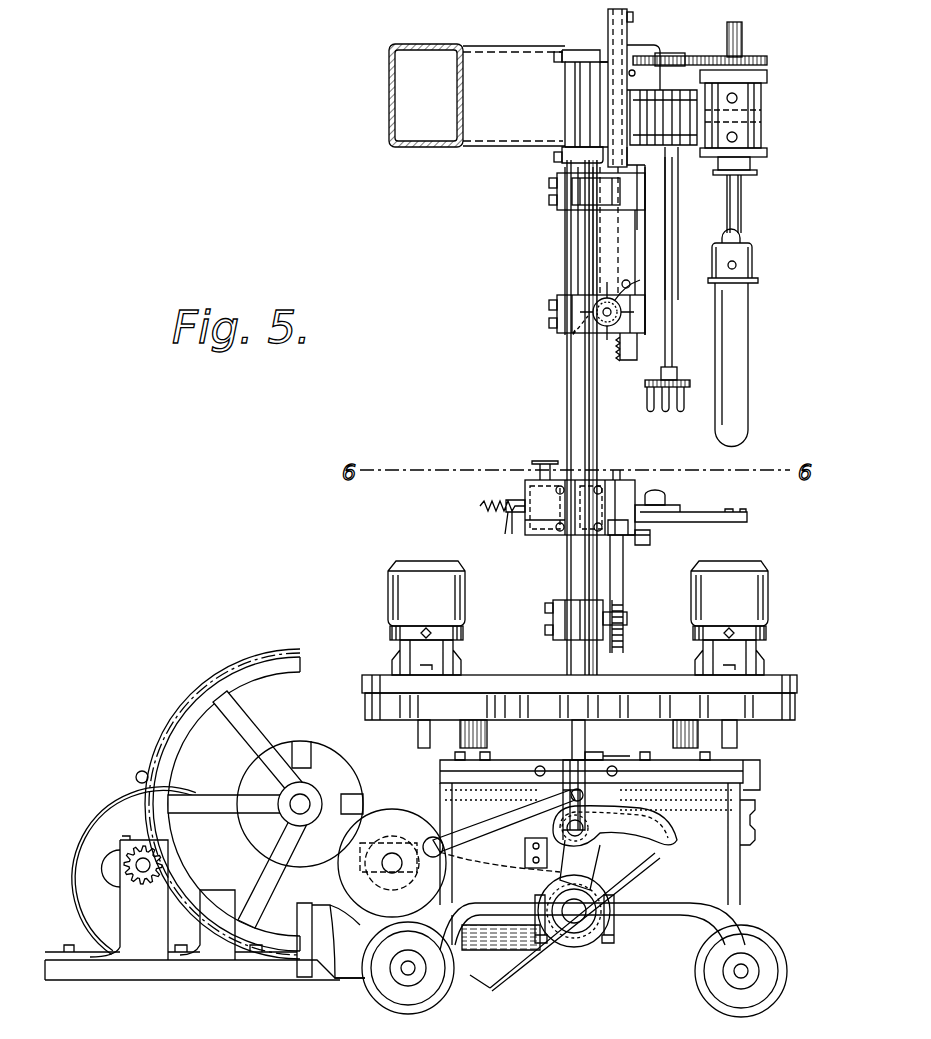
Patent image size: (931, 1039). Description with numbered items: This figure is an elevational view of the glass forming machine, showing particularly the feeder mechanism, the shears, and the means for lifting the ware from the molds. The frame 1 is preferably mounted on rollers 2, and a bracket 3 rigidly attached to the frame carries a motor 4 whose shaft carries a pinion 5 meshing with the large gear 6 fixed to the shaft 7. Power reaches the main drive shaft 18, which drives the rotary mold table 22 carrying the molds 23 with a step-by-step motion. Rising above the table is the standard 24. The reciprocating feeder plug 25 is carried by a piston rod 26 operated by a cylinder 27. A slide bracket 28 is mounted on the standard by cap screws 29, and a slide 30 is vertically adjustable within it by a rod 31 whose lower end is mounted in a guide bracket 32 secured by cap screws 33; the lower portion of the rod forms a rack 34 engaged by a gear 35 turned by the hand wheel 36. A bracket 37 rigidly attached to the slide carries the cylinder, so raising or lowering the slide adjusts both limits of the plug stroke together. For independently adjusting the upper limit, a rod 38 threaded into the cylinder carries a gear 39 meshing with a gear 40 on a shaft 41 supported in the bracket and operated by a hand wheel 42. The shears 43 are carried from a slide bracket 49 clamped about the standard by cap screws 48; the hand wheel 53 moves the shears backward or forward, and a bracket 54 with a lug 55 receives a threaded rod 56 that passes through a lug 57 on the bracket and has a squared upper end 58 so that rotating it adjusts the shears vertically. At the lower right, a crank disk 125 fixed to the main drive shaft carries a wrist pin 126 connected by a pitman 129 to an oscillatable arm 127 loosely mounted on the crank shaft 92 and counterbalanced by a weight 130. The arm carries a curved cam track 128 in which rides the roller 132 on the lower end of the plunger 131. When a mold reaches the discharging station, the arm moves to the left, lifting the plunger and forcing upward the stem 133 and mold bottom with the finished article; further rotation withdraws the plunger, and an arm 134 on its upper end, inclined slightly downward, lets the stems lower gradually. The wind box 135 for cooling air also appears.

The frame 1 is at (720, 889).
The rollers 2 is at (392, 992).
The bracket 3 is at (178, 972).
The motor 4 is at (107, 792).
The pinion 5 is at (136, 855).
The large gear 6 is at (236, 670).
The shaft 7 is at (288, 798).
The main drive shaft 18 is at (392, 853).
The rotary mold table 22 is at (470, 680).
The molds 23 is at (390, 590).
The standard 24 is at (567, 408).
The feeder plug 25 is at (752, 397).
The piston rod 26 is at (745, 208).
The cylinder 27 is at (765, 128).
The slide bracket 28 is at (608, 27).
The cap screws 29 is at (563, 60).
The slide 30 is at (630, 97).
The rod 31 is at (634, 162).
The guide bracket 32 is at (600, 222).
The cap screws 33 is at (557, 198).
The rack 34 is at (628, 345).
The gear 35 is at (565, 350).
The hand wheel 36 is at (583, 328).
The bracket 37 is at (690, 148).
The rod 38 is at (742, 36).
The gear 39 is at (765, 58).
The gear 40 is at (672, 57).
The shaft 41 is at (673, 238).
The hand wheel 42 is at (647, 410).
The shears 43 is at (745, 522).
The cap screws 48 is at (558, 535).
The slide bracket 49 is at (662, 490).
The hand wheel 53 is at (538, 460).
The bracket 54 is at (562, 615).
The lug 55 is at (628, 620).
The threaded rod 56 is at (624, 586).
The lug 57 is at (650, 537).
The squared upper end 58 is at (620, 478).
The crank shaft 92 is at (574, 926).
The crank disk 125 is at (352, 885).
The wrist pin 126 is at (450, 851).
The oscillatable arm 127 is at (622, 872).
The curved cam track 128 is at (673, 843).
The pitman 129 is at (508, 826).
The weight 130 is at (486, 993).
The plunger 131 is at (563, 762).
The roller 132 is at (584, 837).
The stem 133 is at (418, 740).
The arm 134 is at (630, 758).
The wind box 135 is at (402, 103).